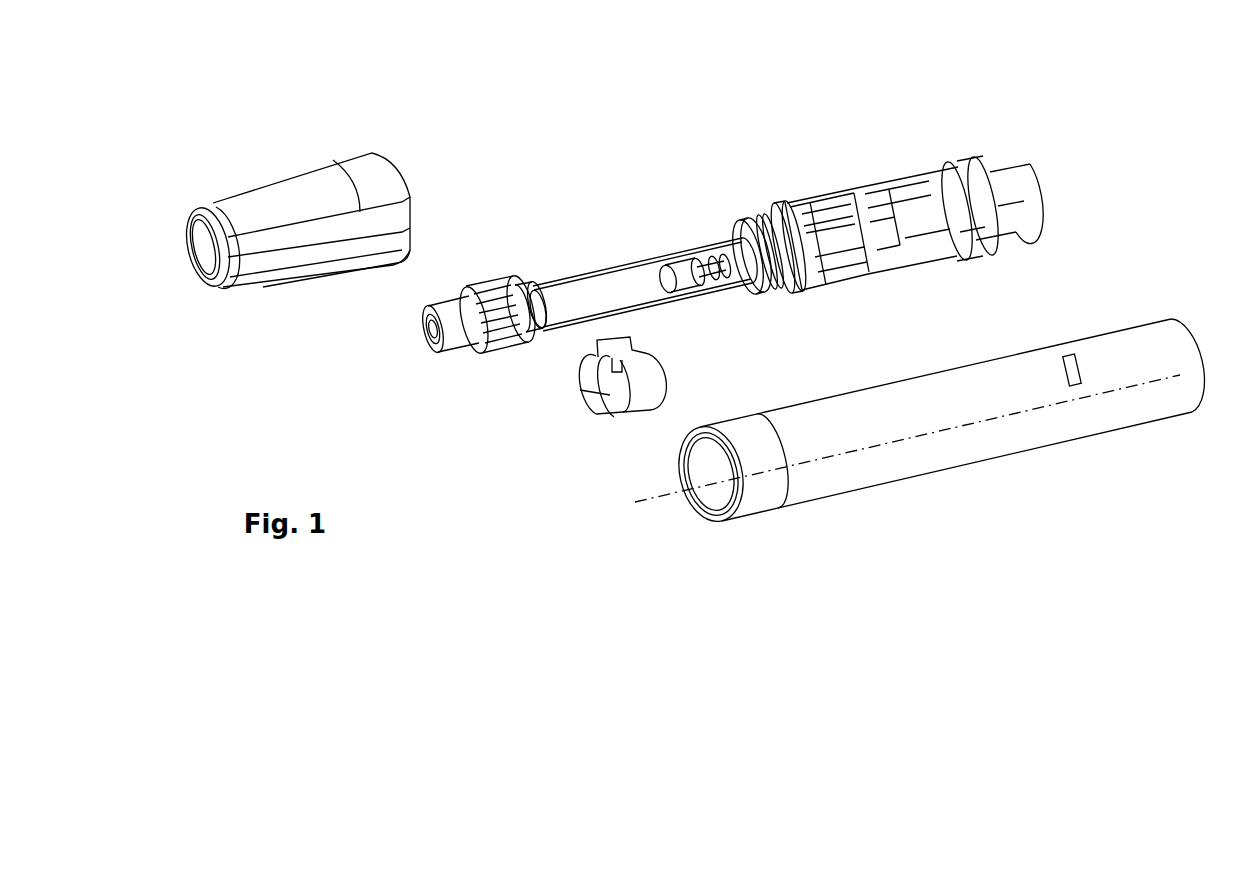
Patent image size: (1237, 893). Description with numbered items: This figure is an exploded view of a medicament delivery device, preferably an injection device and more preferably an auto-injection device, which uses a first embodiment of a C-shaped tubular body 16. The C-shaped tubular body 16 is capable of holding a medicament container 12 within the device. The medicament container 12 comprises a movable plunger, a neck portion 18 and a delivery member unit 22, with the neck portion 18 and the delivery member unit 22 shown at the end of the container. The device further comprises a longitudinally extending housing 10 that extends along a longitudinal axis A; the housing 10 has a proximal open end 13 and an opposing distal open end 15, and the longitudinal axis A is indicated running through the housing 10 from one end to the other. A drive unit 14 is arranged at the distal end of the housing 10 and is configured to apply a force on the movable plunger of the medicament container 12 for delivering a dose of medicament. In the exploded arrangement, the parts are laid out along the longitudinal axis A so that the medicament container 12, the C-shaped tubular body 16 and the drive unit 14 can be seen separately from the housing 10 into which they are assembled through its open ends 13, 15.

The housing 10 is at (1087, 433).
The medicament container 12 is at (618, 265).
The proximal open end 13 is at (667, 480).
The drive unit 14 is at (867, 183).
The distal open end 15 is at (1200, 340).
The C-shaped tubular body 16 is at (573, 398).
The neck portion 18 is at (530, 288).
The delivery member unit 22 is at (425, 352).
The longitudinal axis A is at (817, 460).